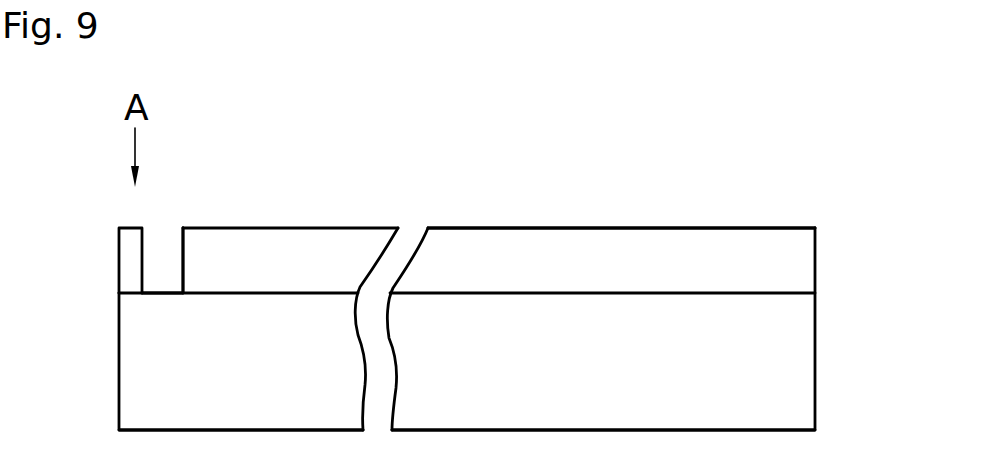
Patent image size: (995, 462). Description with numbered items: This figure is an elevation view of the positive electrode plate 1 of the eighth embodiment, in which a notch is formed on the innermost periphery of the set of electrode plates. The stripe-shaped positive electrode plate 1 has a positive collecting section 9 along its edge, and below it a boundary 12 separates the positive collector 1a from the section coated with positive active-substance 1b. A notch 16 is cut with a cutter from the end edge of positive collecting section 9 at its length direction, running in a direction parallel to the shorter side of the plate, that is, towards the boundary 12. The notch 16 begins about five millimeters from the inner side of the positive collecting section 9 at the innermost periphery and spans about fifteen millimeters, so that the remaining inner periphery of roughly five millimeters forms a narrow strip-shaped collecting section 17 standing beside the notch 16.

The positive electrode plate 1 is at (106, 331).
The positive collector 1a is at (780, 262).
The positive active-substance 1b is at (795, 387).
The positive collecting section 9 is at (729, 228).
The boundary 12 is at (748, 294).
The notch 16 is at (158, 262).
The strip-shaped collecting section 17 is at (128, 246).